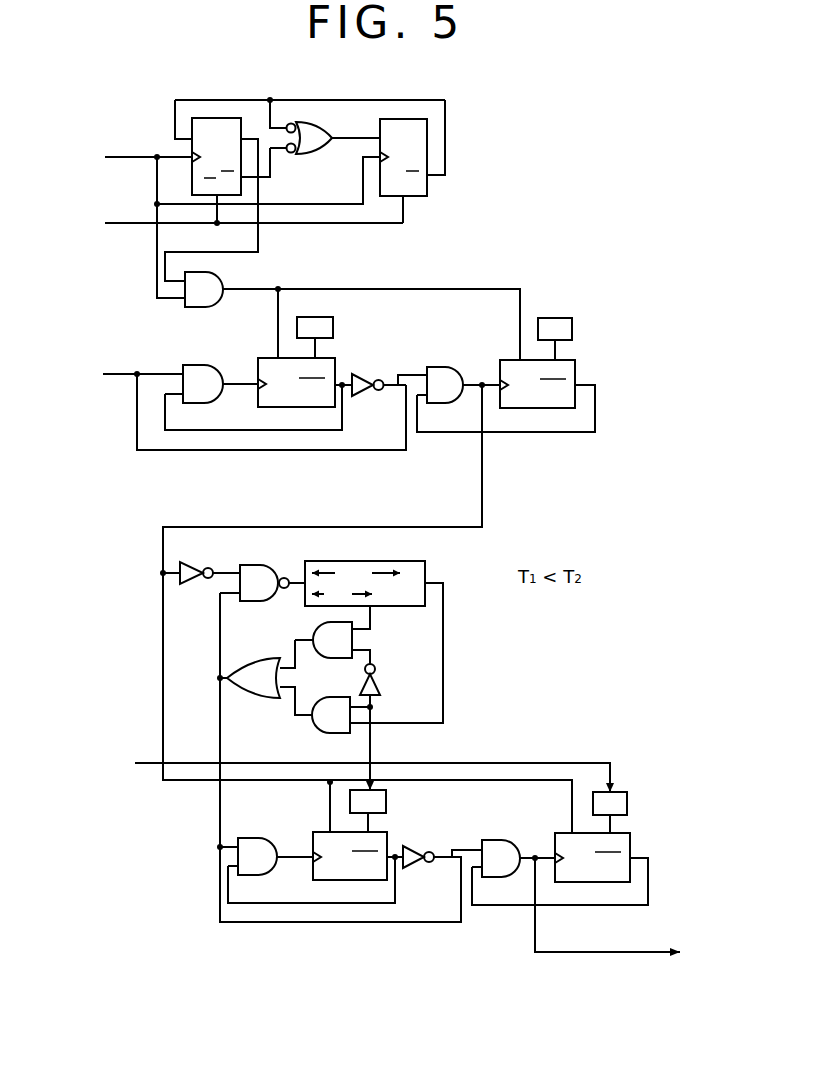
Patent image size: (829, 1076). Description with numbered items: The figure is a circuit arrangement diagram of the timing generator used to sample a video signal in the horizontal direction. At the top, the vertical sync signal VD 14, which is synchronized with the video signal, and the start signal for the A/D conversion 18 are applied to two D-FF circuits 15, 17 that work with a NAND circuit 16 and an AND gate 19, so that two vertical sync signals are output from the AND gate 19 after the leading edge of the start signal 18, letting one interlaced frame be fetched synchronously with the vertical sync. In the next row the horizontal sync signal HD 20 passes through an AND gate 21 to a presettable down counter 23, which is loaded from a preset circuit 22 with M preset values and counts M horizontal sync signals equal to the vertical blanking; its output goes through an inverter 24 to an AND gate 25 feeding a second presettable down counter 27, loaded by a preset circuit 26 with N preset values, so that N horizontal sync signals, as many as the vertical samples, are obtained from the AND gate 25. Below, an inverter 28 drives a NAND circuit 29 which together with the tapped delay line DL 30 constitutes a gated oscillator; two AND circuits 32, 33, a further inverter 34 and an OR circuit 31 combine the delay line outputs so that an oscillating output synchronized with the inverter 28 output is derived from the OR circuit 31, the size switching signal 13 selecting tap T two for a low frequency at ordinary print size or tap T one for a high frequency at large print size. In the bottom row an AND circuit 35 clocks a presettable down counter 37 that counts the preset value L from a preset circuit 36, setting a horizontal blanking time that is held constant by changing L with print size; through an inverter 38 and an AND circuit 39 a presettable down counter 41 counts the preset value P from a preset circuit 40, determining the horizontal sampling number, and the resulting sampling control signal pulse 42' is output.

The size switching signal 13 is at (69, 750).
The vertical sync signal VD 14 is at (68, 142).
The D-FF circuit 15 is at (192, 146).
The NAND circuit 16 is at (322, 130).
The D-FF circuit 17 is at (428, 192).
The start signal for the A/D conversion 18 is at (66, 210).
The AND gate 19 is at (214, 282).
The horizontal sync signal HD 20 is at (67, 363).
The AND gate 21 is at (203, 368).
The preset circuit 22 is at (334, 326).
The presettable down counter 23 is at (334, 357).
The inverter 24 is at (362, 375).
The AND gate 25 is at (443, 370).
The preset circuit 26 is at (565, 318).
The presettable down counter 27 is at (577, 366).
The inverter 28 is at (195, 566).
The NAND circuit 29 is at (262, 566).
The tapped delay line DL 30 is at (397, 553).
The OR circuit 31 is at (264, 660).
The AND circuit 32 is at (318, 630).
The AND circuit 33 is at (345, 700).
The inverter 34 is at (380, 684).
The AND circuit 35 is at (258, 829).
The preset circuit 36 is at (388, 806).
The presettable down counter 37 is at (313, 870).
The inverter 38 is at (413, 848).
The AND circuit 39 is at (492, 841).
The preset circuit 40 is at (628, 804).
The presettable down counter 41 is at (630, 842).
The control signal pulse 42' is at (676, 930).